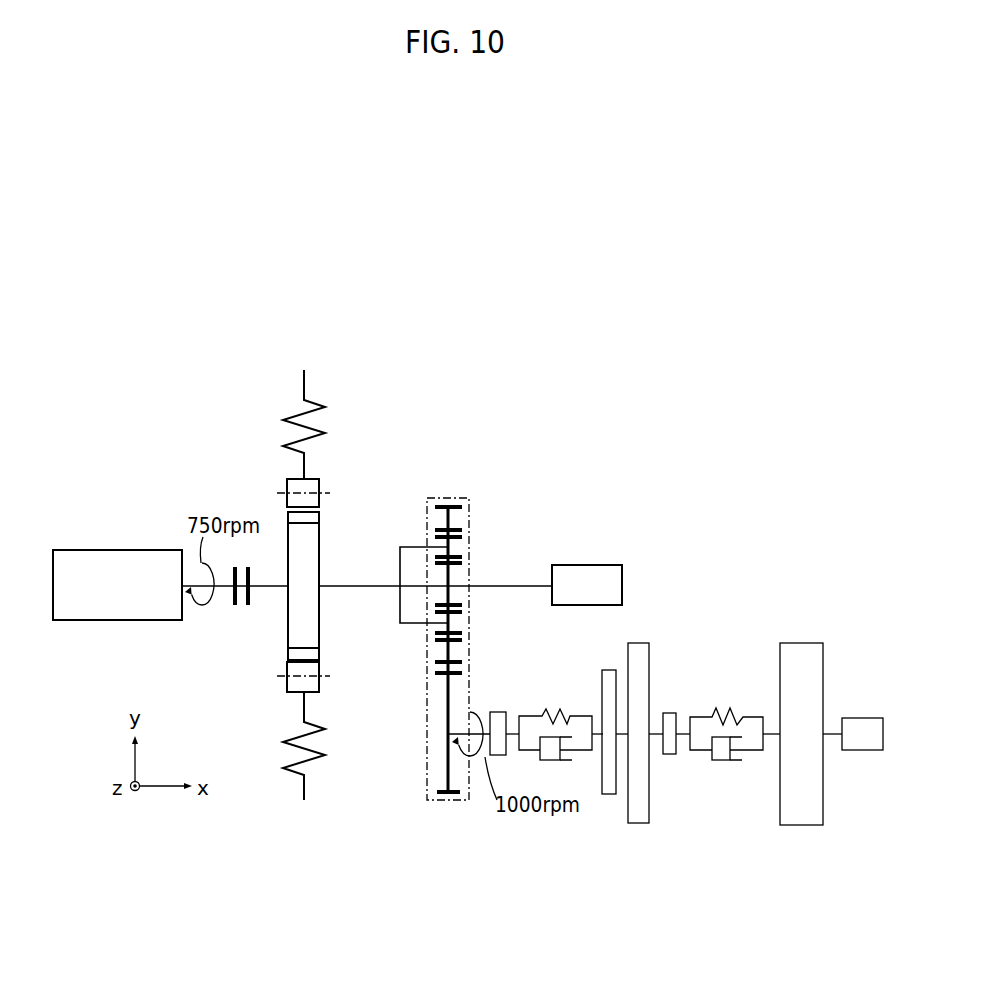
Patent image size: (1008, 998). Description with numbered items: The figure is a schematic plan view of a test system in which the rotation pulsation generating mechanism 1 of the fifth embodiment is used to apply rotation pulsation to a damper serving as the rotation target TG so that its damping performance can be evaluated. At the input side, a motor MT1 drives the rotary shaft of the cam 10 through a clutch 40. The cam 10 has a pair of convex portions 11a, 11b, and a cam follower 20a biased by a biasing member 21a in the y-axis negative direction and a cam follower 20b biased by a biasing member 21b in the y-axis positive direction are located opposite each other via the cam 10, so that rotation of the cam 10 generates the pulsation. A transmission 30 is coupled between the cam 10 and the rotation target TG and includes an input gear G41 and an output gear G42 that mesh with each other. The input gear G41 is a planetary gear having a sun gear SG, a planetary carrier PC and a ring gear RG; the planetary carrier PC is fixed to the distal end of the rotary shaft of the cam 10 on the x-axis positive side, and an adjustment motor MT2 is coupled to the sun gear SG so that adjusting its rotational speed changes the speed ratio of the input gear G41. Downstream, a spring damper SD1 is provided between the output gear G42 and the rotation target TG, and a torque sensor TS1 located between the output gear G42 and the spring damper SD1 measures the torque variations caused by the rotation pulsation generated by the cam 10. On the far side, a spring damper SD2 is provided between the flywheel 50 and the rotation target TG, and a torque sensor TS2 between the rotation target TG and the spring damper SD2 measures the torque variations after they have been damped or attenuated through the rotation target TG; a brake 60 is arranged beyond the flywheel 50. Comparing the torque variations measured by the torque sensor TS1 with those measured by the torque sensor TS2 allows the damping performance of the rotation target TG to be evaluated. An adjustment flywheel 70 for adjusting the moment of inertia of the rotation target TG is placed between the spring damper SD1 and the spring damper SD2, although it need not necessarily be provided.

The rotation pulsation generating mechanism 1 is at (471, 605).
The cam 10 is at (318, 565).
The convex portion 11a is at (318, 517).
The convex portion 11b is at (318, 648).
The cam follower 20a is at (313, 482).
The cam follower 20b is at (318, 682).
The biasing member 21a is at (318, 422).
The biasing member 21b is at (318, 768).
The transmission 30 is at (471, 643).
The clutch 40 is at (236, 607).
The flywheel 50 is at (803, 645).
The brake 60 is at (862, 718).
The adjustment flywheel 70 is at (643, 643).
The motor MT1 is at (117, 585).
The adjustment motor MT2 is at (587, 585).
The sun gear SG is at (453, 592).
The planetary carrier PC is at (450, 622).
The ring gear RG is at (450, 650).
The input gear G41 is at (511, 592).
The output gear G42 is at (447, 757).
The torque sensor TS1 is at (497, 712).
The torque sensor TS2 is at (670, 713).
The spring damper SD1 is at (550, 717).
The spring damper SD2 is at (722, 696).
The rotation target TG is at (608, 796).